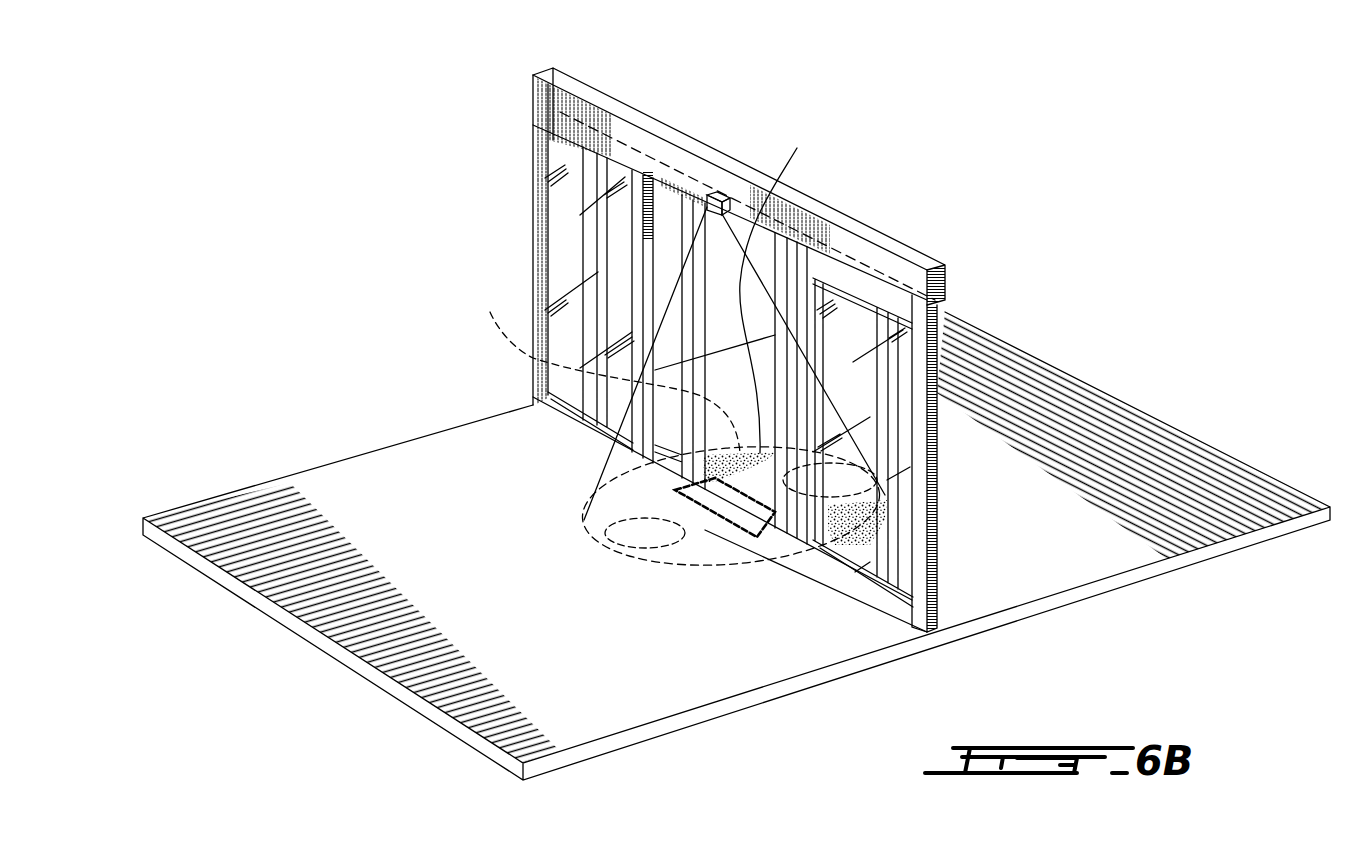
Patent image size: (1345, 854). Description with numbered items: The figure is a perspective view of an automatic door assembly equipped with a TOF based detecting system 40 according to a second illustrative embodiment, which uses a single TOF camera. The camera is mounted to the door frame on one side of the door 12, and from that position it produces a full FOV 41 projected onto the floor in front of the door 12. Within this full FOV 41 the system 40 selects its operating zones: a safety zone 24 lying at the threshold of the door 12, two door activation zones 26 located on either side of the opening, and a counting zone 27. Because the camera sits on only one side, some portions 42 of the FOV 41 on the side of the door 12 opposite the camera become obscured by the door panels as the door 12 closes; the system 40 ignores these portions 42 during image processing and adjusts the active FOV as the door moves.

The TOF based detecting system 40 is at (736, 422).
The door 12 is at (912, 246).
The obscured portions 42 is at (1053, 640).
The full FOV 41 is at (617, 453).
The door activation zones 26 is at (642, 540).
The safety zone 24 is at (733, 512).
The counting zone 27 is at (606, 369).